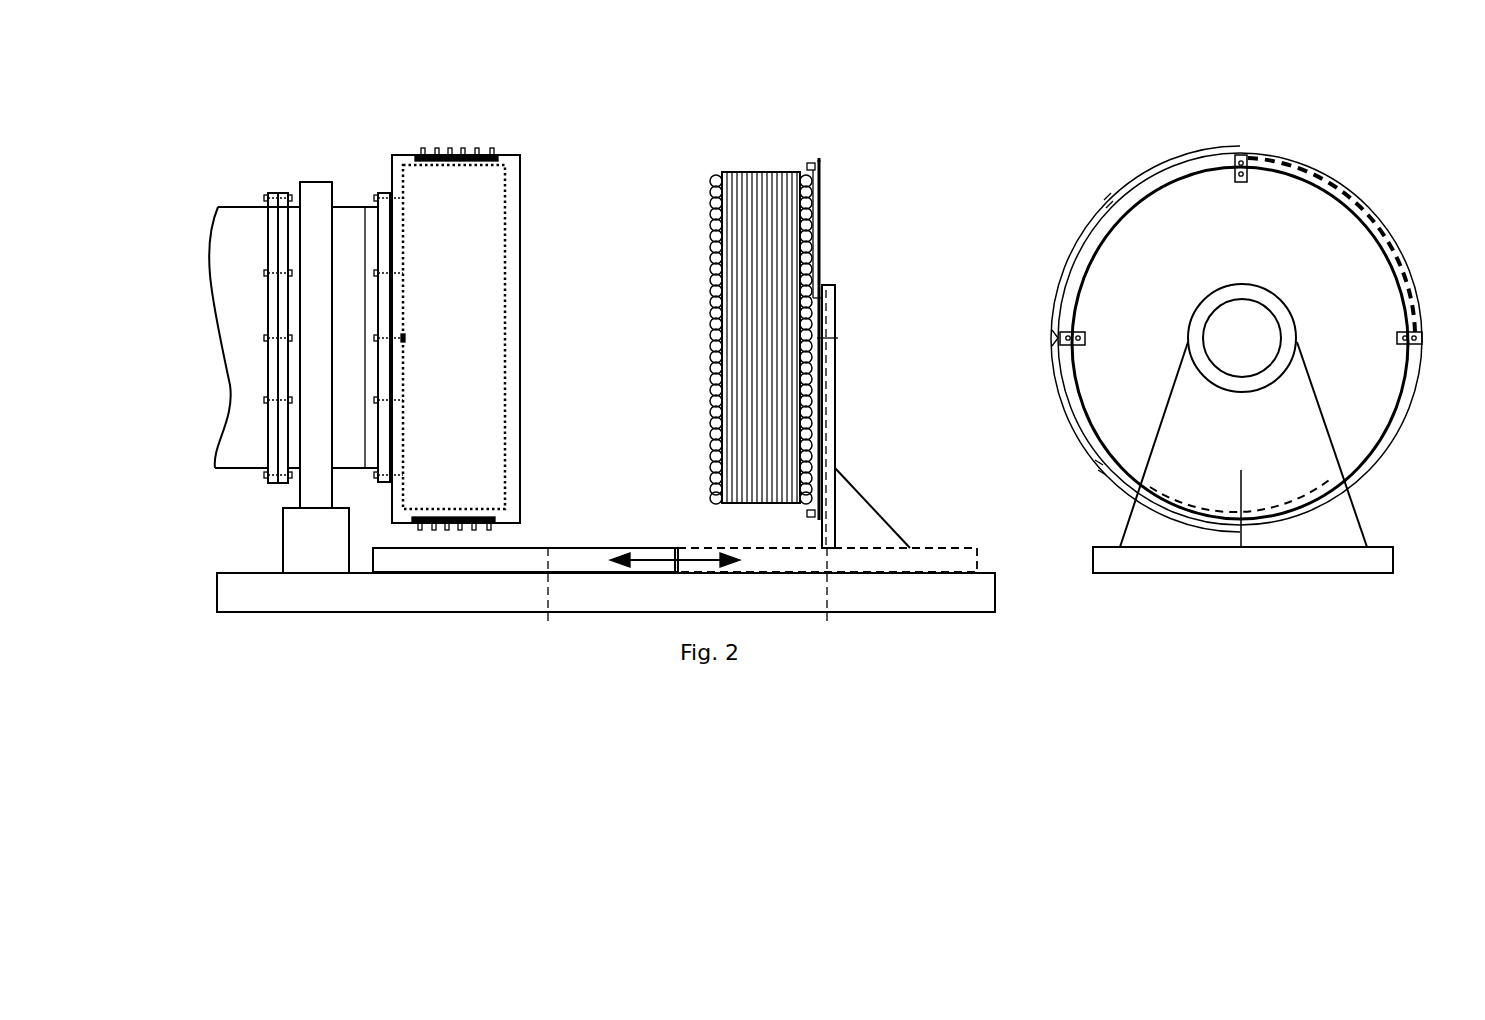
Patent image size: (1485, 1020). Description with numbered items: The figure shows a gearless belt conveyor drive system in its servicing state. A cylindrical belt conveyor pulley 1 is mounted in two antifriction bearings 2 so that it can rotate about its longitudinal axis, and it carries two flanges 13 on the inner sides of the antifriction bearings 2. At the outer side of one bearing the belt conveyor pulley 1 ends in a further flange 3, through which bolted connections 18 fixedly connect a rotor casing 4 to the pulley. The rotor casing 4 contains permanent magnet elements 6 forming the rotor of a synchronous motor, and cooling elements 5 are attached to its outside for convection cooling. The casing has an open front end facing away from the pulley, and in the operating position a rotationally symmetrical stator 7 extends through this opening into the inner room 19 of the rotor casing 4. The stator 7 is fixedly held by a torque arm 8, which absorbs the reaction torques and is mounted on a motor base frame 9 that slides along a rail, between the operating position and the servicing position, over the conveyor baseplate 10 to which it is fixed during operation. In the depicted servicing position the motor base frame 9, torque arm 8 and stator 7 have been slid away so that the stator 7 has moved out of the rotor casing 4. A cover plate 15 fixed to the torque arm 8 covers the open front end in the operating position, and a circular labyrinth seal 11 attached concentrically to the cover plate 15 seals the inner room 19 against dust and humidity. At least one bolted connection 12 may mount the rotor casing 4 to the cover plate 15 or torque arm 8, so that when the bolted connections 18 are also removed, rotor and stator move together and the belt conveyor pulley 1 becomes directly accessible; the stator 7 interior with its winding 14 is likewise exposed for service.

The belt conveyor pulley 1 is at (253, 317).
The antifriction bearings 2 is at (273, 301).
The further flange 3 is at (359, 288).
The rotor casing 4 is at (456, 315).
The cooling elements 5 is at (804, 318).
The permanent magnet elements 6 is at (953, 319).
The stator 7 is at (812, 253).
The torque arm 8 is at (1125, 416).
The motor base frame 9 is at (883, 574).
The conveyor baseplate 10 is at (551, 556).
The labyrinth seal 11 is at (1120, 328).
The bolted connection 12 is at (1241, 226).
The flanges 13 is at (196, 291).
The winding 14 is at (764, 320).
The cover plate 15 is at (1135, 340).
The bolted connections 18 is at (405, 337).
The inner room 19 is at (452, 244).